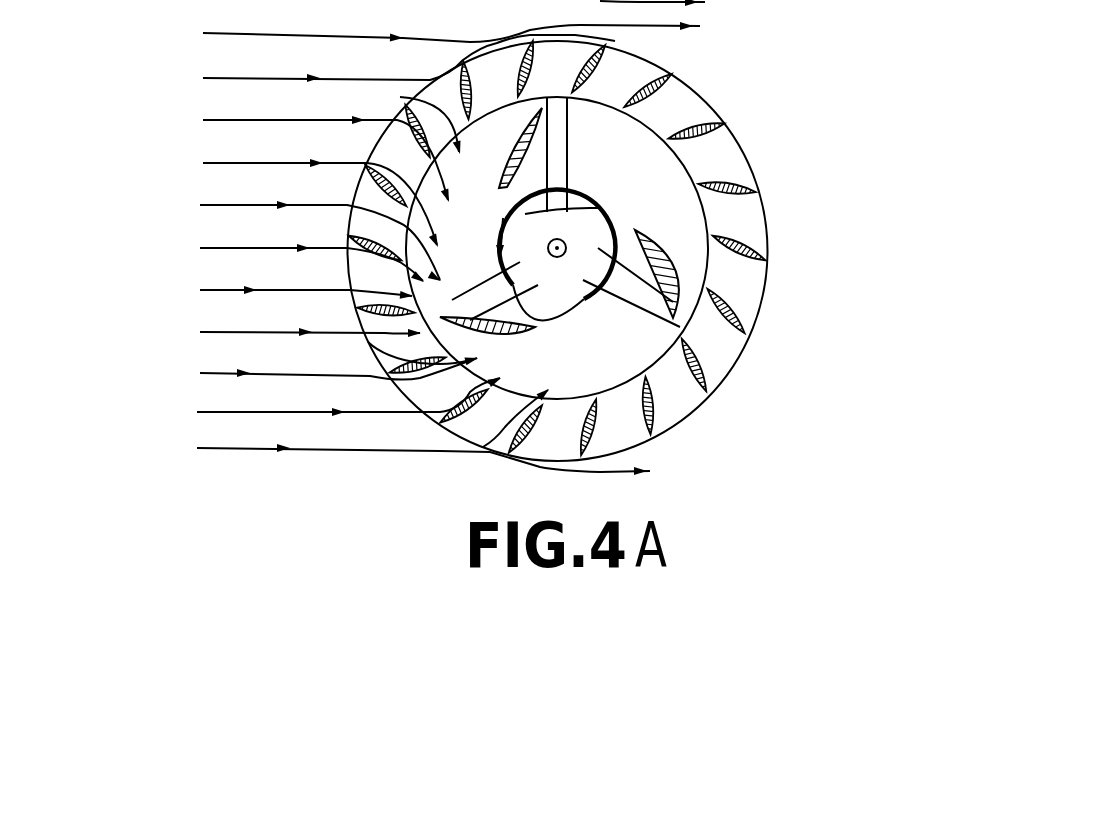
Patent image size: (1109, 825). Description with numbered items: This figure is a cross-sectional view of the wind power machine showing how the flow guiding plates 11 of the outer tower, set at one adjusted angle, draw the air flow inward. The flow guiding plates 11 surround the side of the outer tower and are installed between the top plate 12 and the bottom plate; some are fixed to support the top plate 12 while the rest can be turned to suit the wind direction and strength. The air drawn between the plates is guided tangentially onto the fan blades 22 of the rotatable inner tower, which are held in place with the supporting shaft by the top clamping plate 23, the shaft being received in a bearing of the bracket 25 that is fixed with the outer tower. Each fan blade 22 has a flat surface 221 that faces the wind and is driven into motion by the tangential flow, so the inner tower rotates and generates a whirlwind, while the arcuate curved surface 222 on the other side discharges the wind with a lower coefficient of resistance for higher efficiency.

The flow guiding plates 11 is at (740, 243).
The top plate 12 is at (692, 113).
The fan blades 22 is at (703, 331).
The top clamping plate 23 is at (578, 237).
The bracket 25 is at (557, 155).
The flat surface 221 is at (490, 306).
The curved surface 222 is at (516, 344).